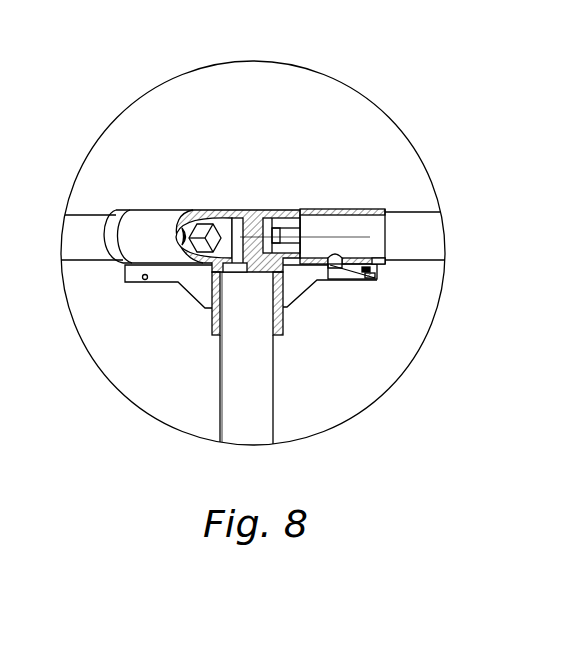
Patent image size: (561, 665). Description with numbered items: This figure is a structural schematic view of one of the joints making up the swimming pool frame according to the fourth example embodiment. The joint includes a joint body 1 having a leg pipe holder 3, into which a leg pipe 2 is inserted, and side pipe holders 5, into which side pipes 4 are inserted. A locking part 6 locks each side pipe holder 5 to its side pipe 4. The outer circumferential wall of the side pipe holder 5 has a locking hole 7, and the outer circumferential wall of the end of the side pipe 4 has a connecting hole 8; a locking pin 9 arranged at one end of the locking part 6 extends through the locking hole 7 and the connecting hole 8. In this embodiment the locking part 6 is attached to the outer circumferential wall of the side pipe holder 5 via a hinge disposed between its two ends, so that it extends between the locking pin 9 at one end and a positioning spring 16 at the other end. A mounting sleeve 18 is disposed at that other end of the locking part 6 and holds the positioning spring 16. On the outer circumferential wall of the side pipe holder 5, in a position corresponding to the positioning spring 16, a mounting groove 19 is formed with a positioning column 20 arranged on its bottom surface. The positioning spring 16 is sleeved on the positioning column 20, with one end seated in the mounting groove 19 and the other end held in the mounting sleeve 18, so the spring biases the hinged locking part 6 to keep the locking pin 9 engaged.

The joint body 1 is at (226, 142).
The leg pipe 2 is at (200, 371).
The leg pipe holder 3 is at (222, 351).
The side pipe 4 is at (252, 190).
The side pipe holder 5 is at (218, 137).
The locking part 6 is at (380, 344).
The locking hole 7 is at (319, 375).
The connecting hole 8 is at (324, 134).
The locking pin 9 is at (316, 151).
The positioning spring 16 is at (418, 314).
The mounting sleeve 18 is at (421, 289).
The mounting groove 19 is at (394, 181).
The positioning column 20 is at (428, 221).